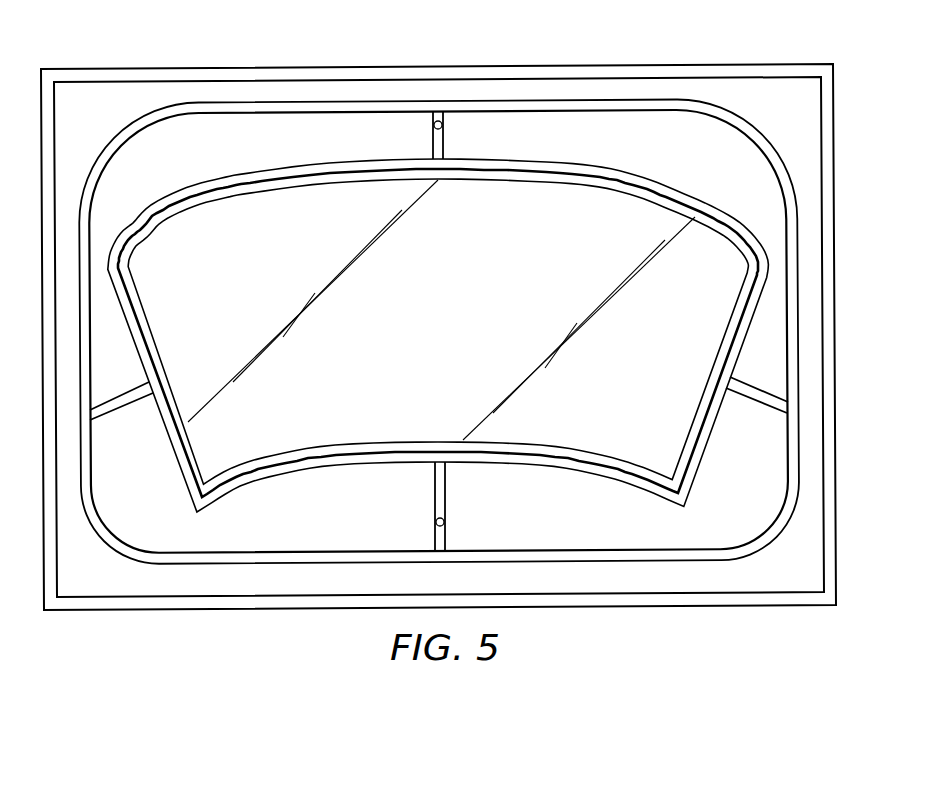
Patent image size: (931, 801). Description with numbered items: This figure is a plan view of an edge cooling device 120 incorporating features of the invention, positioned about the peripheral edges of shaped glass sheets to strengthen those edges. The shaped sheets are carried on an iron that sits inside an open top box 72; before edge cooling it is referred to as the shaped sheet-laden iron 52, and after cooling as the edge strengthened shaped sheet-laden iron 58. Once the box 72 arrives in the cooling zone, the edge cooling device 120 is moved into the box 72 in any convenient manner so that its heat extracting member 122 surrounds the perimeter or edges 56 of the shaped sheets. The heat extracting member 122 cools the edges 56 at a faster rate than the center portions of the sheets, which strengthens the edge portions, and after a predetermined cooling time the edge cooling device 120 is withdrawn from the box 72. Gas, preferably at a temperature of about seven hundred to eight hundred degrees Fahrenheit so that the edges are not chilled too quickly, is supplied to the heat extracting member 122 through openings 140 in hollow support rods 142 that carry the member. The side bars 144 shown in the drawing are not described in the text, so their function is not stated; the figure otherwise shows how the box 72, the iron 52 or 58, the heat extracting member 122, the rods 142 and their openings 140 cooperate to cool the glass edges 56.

The open top box 72 is at (705, 63).
The edge cooling device 120 is at (682, 568).
The heat extracting member 122 is at (622, 160).
The edges of the shaped sheets 56 is at (736, 311).
The shaped sheet-laden iron 52 is at (452, 300).
The edge strengthened shaped sheet-laden iron 58 is at (452, 366).
The openings 140 is at (434, 126).
The hollow support rods 142 is at (446, 143).
The side bar 144 is at (757, 404).